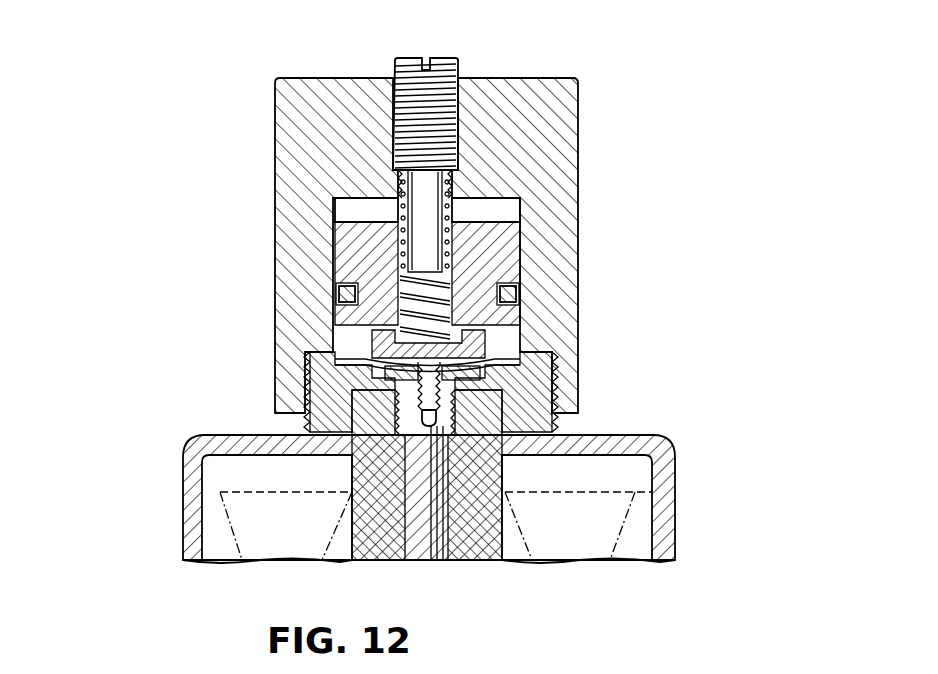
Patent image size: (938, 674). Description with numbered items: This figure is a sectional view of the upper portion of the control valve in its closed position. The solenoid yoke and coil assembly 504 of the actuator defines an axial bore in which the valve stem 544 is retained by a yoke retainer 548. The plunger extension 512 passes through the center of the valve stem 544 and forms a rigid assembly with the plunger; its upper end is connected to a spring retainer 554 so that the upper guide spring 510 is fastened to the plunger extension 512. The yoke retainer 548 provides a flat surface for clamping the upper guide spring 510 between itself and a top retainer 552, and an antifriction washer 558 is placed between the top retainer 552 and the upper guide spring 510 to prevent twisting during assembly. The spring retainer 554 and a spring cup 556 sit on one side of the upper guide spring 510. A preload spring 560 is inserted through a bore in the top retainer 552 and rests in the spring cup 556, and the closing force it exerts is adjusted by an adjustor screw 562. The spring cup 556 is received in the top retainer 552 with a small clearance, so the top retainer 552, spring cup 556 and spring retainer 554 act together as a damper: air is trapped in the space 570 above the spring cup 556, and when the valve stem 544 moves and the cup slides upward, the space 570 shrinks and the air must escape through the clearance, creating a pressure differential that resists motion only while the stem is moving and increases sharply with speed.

The solenoid yoke and coil assembly 504 is at (190, 492).
The upper guide spring 510 is at (470, 362).
The plunger extension 512 is at (430, 480).
The valve stem 544 is at (520, 437).
The yoke retainer 548 is at (325, 403).
The top retainer 552 is at (578, 128).
The spring retainer 554 is at (375, 342).
The spring cup 556 is at (345, 240).
The antifriction washer 558 is at (340, 361).
The preload spring 560 is at (400, 273).
The adjustor screw 562 is at (445, 58).
The space 570 is at (520, 206).